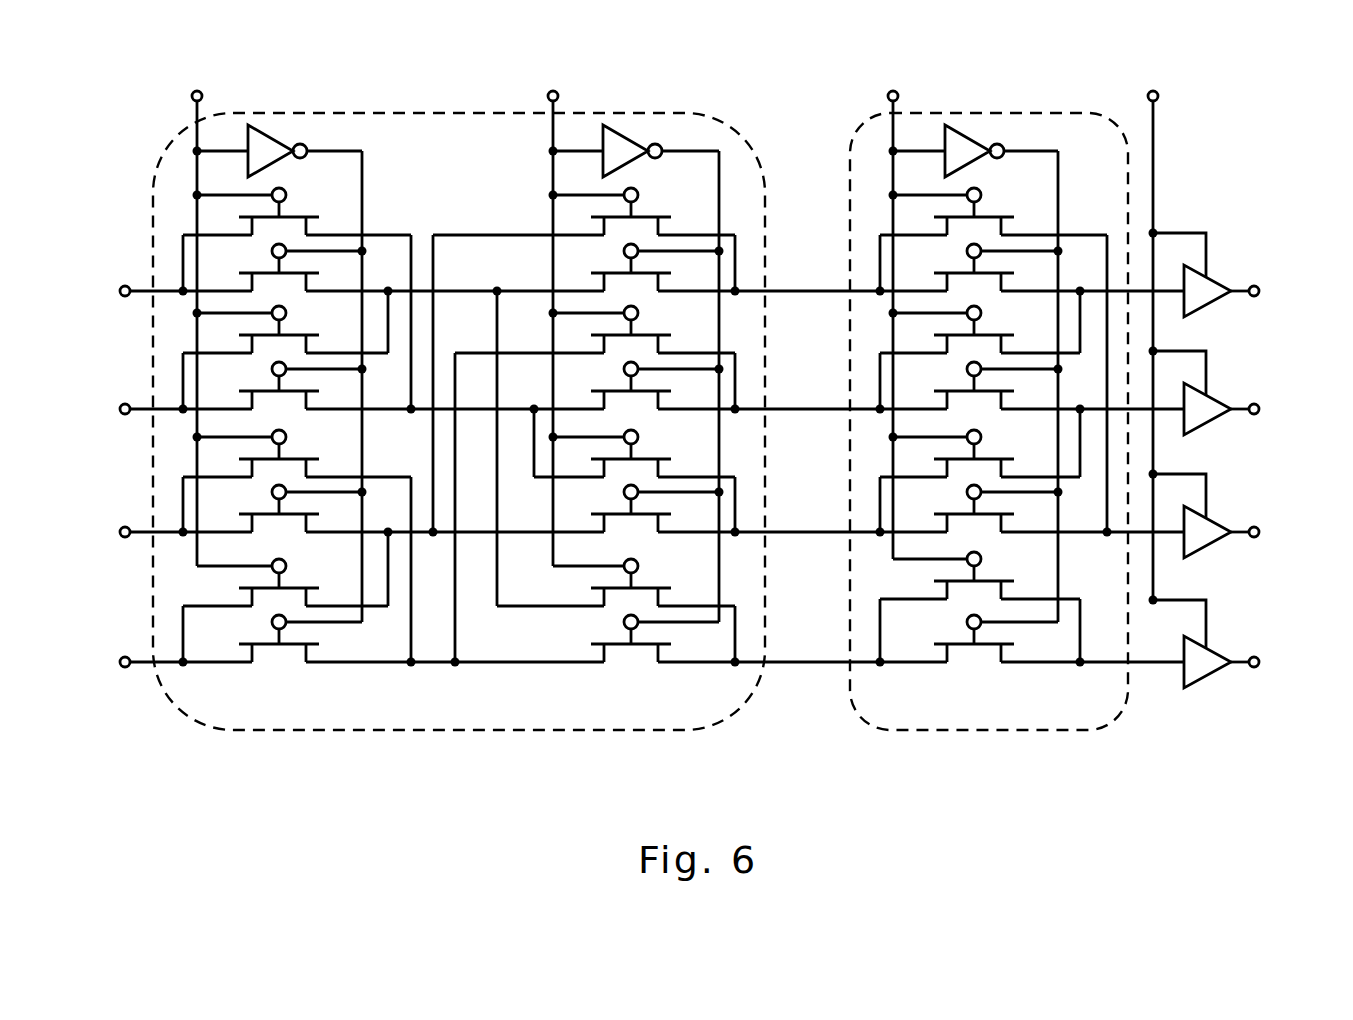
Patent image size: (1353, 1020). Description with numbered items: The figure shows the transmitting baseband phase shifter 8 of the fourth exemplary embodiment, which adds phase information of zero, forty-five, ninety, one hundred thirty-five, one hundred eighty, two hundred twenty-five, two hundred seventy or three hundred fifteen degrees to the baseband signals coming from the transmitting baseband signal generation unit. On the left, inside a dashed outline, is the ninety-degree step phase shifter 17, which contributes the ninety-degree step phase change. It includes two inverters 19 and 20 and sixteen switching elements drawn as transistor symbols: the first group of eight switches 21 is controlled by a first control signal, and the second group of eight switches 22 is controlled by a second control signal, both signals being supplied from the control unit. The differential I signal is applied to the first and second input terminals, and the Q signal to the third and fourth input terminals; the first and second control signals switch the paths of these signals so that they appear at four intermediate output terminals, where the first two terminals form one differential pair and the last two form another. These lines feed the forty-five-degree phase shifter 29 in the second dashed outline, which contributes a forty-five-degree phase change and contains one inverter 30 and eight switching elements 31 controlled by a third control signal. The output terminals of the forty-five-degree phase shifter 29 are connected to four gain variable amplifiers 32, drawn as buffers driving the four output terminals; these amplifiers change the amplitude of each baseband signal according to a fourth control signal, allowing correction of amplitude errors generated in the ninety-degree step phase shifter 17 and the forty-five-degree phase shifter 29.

The transmitting baseband phase shifter 8 is at (746, 37).
The 90° step phase shifter 17 is at (160, 178).
The inverter 19 is at (265, 124).
The inverter 20 is at (627, 124).
The switches 21-1 to 21-8 21 is at (263, 646).
The switches 22-1 to 22-8 22 is at (618, 646).
The 45° phase shifter 29 is at (1128, 180).
The inverter 30 is at (960, 124).
The switching elements 31-1 to 31-8 31 is at (972, 646).
The gain variable amplifiers 32-1 to 32-4 32 is at (1203, 690).